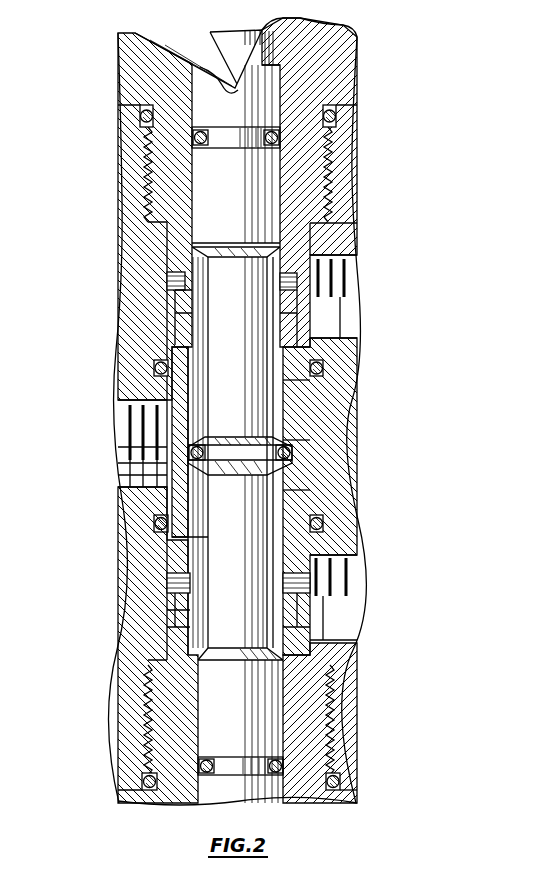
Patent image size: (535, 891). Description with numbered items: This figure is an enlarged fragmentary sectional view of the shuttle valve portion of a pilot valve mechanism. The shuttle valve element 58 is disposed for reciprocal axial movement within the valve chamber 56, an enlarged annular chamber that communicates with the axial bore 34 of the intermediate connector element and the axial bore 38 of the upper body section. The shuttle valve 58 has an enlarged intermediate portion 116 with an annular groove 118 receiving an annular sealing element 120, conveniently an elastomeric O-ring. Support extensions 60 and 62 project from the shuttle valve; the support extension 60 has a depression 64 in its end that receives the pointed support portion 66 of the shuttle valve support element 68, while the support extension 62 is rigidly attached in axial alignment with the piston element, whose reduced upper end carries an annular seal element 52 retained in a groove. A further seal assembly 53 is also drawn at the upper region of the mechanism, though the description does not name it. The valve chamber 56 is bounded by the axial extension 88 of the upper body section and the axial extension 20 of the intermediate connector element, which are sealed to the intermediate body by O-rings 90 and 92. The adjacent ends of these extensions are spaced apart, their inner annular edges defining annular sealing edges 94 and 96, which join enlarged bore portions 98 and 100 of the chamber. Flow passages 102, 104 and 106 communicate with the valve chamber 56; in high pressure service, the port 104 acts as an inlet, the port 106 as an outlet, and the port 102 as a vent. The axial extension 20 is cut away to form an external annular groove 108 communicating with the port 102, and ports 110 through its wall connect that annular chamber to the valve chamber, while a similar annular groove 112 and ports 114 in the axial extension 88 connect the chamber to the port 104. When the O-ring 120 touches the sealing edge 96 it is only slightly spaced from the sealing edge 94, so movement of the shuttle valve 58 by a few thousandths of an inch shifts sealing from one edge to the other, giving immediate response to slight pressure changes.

The axial extension 20 is at (330, 742).
The axial bore 34 is at (277, 627).
The axial bore 38 is at (336, 182).
The annular seal element 52 is at (284, 766).
The upper seal assembly 53 is at (282, 141).
The valve chamber 56 is at (296, 402).
The shuttle valve assembly 58 is at (205, 398).
The shuttle valve support extension 60 is at (217, 207).
The shuttle valve support extension 62 is at (222, 718).
The depression 64 is at (255, 49).
The pointed support portion 66 is at (305, 24).
The shuttle valve support element 68 is at (223, 33).
The axial extension 88 is at (318, 211).
The O-ring 90 is at (323, 368).
The O-ring 92 is at (324, 524).
The annular sealing edge 94 is at (148, 440).
The annular sealing edge 96 is at (293, 452).
The enlarged bore portion 98 is at (300, 425).
The enlarged bore portion 100 is at (300, 476).
The flow passage 102 is at (340, 613).
The flow passage 104 is at (340, 273).
The flow passage 106 is at (160, 412).
The external annular groove 108 is at (186, 592).
The port 110 is at (178, 606).
The annular groove 112 is at (178, 282).
The port 114 is at (190, 308).
The enlarged intermediate portion 116 is at (232, 472).
The annular groove 118 is at (228, 450).
The annular sealing element 120 is at (192, 455).